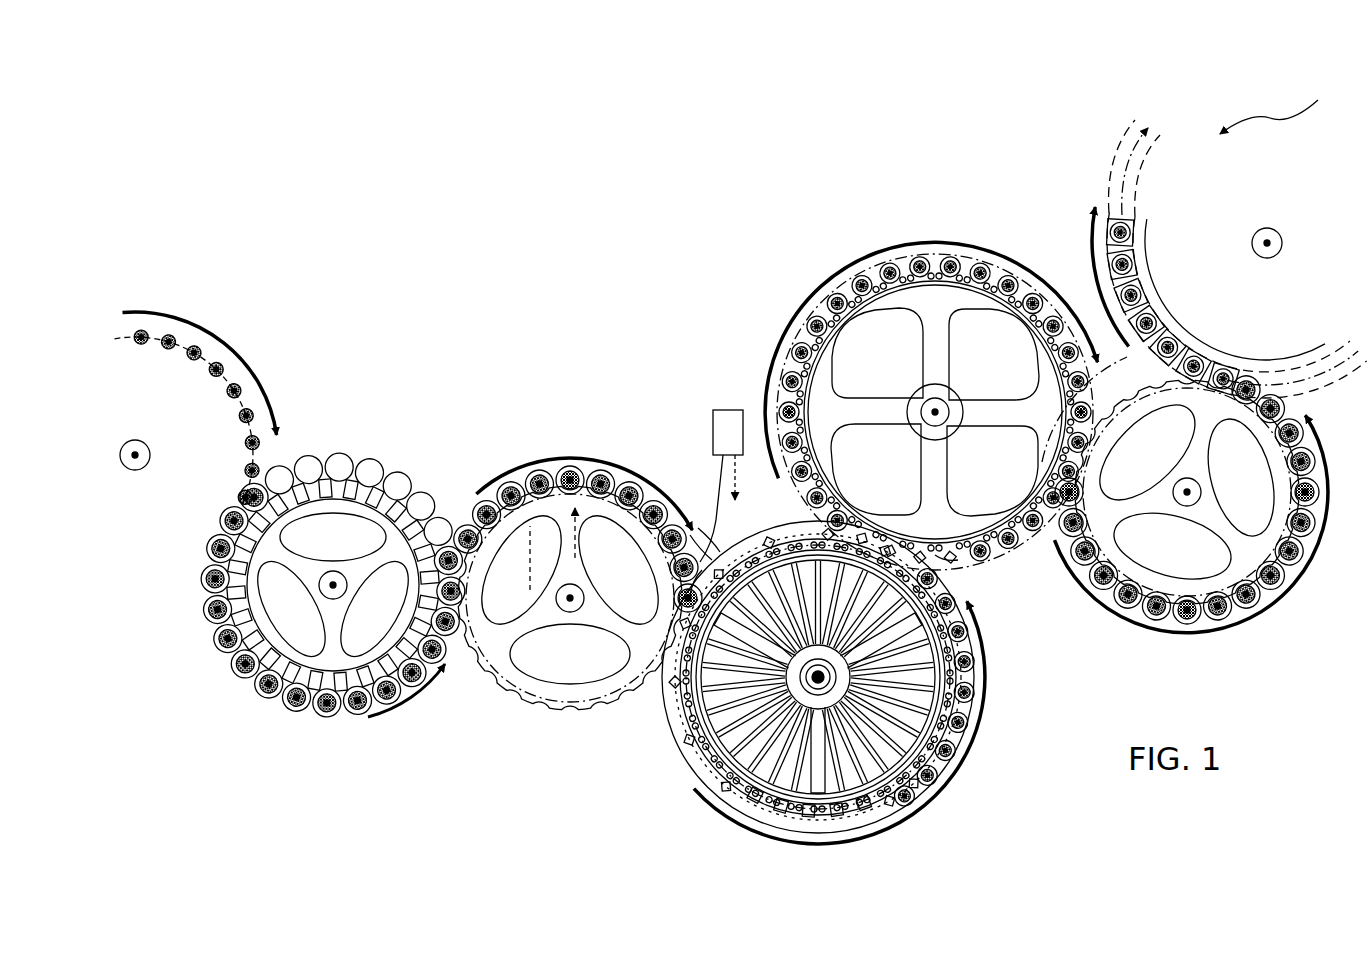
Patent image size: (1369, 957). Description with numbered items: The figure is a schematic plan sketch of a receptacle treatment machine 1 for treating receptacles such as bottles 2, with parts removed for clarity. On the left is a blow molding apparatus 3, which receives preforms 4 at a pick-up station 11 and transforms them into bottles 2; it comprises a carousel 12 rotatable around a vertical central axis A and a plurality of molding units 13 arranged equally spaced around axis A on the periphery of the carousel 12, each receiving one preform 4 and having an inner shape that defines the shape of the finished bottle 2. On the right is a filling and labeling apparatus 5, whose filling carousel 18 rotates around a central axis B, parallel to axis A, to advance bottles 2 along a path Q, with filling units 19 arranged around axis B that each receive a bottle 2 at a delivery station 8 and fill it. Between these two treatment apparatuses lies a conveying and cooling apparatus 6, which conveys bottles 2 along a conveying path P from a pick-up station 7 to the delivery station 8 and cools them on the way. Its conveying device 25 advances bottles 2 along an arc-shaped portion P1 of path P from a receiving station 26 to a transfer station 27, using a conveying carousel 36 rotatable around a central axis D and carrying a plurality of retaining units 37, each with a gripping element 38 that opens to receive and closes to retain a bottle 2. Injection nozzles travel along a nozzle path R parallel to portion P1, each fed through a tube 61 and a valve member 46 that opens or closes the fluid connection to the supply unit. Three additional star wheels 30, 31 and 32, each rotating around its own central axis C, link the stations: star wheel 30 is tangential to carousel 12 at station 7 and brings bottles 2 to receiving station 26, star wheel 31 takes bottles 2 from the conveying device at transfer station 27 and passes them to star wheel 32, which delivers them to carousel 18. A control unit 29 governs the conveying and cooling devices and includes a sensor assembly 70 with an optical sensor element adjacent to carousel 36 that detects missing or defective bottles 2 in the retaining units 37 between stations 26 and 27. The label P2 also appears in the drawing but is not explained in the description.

The receptacle treatment machine 1 is at (1278, 108).
The bottles 2 is at (330, 715).
The blow molding apparatus 3 is at (245, 712).
The preforms 4 is at (238, 398).
The filling and labeling apparatus 5 is at (1103, 147).
The conveying and cooling apparatus 6 is at (605, 782).
The pick-up station 7 is at (462, 508).
The delivery station 8 is at (1302, 410).
The pick-up station 11 is at (292, 466).
The carousel 12 is at (238, 577).
The molding units 13 is at (430, 472).
The filling carousel 18 is at (1146, 270).
The filling units 19 is at (1108, 258).
The conveying device 25 is at (656, 808).
The receiving station 26 is at (704, 565).
The transfer station 27 is at (948, 568).
The control unit 29 is at (718, 405).
The star wheel 30 is at (652, 562).
The star wheel 31 is at (993, 312).
The star wheel 32 is at (1262, 440).
The conveying carousel 36 is at (965, 712).
The retaining units 37 is at (792, 530).
The gripping element 38 is at (768, 546).
The valve members 46 is at (722, 792).
The tubes 61 is at (776, 800).
The sensor assembly 70 is at (706, 540).
The central axis A is at (340, 592).
The central axis B is at (1272, 256).
The central axis C is at (570, 603).
The central axis D is at (952, 738).
The conveying path P is at (578, 505).
The portion of path P P1 is at (938, 800).
The position 2 P2 is at (535, 515).
The path Q is at (1115, 182).
The nozzle path R is at (962, 762).